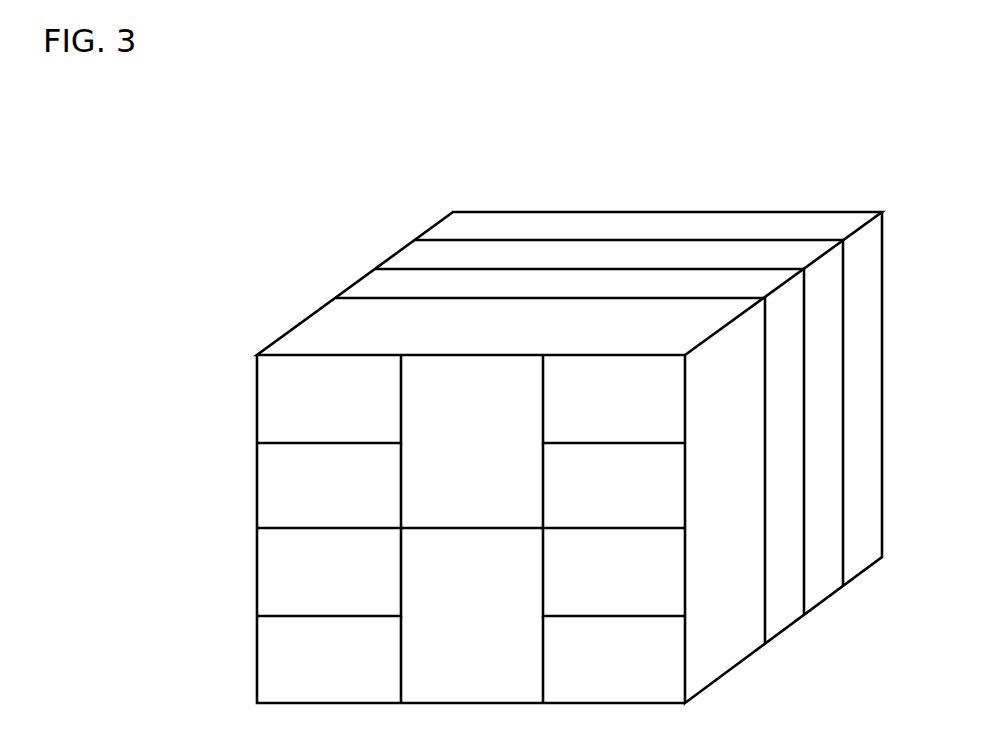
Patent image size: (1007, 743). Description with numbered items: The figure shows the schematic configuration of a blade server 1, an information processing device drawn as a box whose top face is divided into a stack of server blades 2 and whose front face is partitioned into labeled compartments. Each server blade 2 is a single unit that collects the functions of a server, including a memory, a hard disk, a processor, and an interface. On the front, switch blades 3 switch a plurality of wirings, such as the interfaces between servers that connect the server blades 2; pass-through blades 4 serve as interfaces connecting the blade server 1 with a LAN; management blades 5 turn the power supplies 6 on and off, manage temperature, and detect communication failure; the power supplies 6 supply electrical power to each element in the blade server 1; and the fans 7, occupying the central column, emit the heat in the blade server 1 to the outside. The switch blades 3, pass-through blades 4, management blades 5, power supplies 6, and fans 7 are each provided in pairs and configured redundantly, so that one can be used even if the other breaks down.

The blade server 1 is at (577, 111).
The server blade 2 is at (698, 255).
The switch blade 3 is at (263, 398).
The pass-through blade 4 is at (263, 484).
The management blade 5 is at (265, 570).
The power supply 6 is at (265, 657).
The fan 7 is at (470, 365).